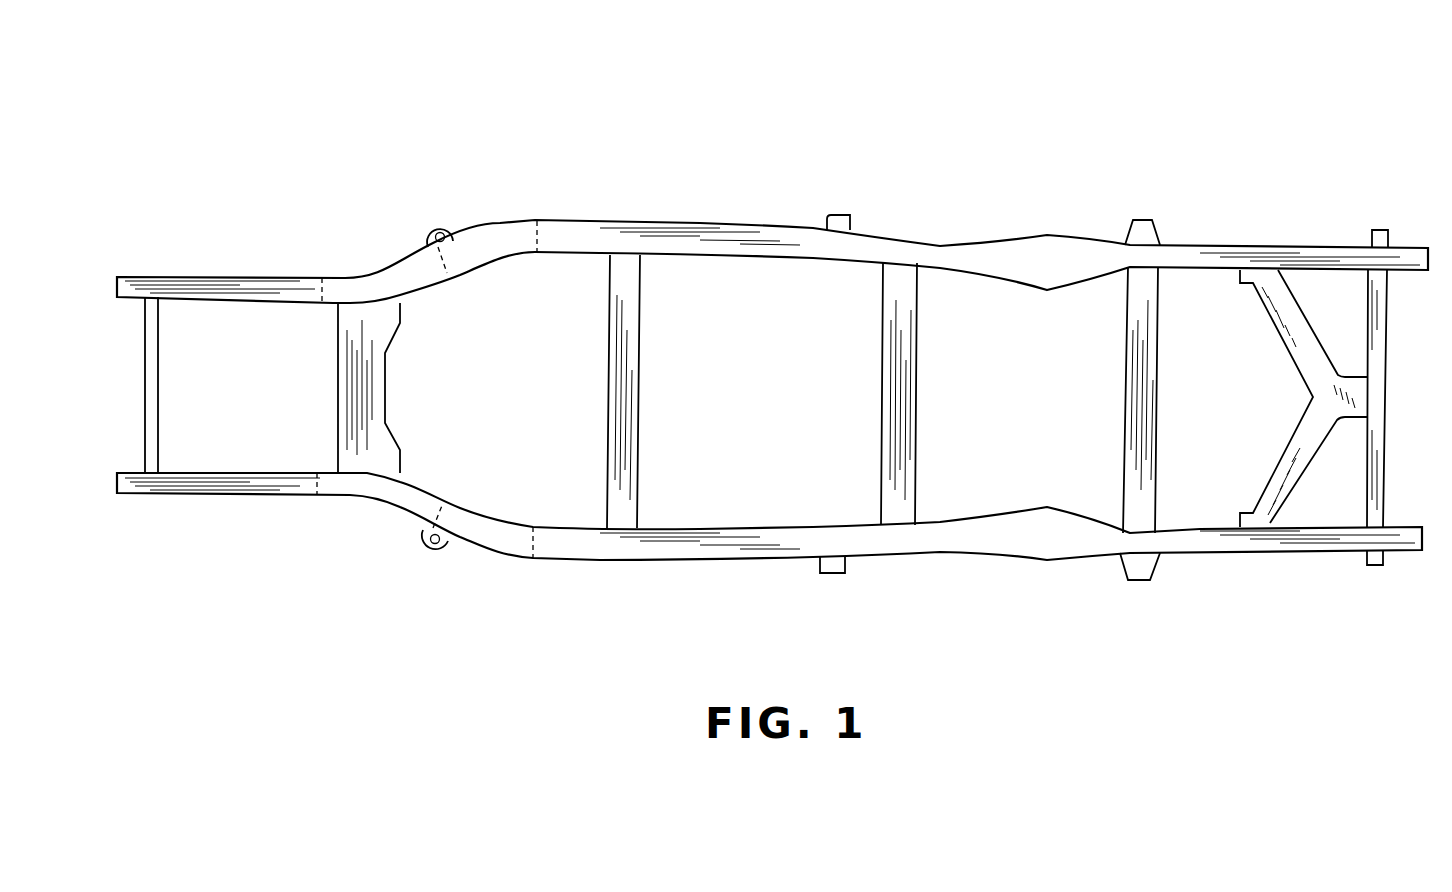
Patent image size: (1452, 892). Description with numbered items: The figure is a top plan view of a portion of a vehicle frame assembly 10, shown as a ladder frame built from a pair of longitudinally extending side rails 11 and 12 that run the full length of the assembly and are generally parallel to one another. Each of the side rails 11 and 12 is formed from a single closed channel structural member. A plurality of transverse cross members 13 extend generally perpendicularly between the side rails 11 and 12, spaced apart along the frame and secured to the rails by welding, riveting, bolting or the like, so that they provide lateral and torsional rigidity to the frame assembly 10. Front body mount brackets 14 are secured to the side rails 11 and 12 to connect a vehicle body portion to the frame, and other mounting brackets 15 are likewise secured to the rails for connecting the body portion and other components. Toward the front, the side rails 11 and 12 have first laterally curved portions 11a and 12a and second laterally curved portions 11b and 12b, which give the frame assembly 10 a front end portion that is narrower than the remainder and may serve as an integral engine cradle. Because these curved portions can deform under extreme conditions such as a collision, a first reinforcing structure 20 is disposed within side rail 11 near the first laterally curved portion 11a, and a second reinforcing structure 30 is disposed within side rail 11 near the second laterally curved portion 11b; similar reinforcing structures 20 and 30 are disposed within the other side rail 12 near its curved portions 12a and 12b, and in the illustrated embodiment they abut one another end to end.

The vehicle frame assembly 10 is at (1170, 88).
The side rail 11 is at (676, 577).
The first laterally curved portion 11a is at (353, 509).
The second laterally curved portion 11b is at (504, 508).
The side rail 12 is at (694, 203).
The first laterally curved portion 12a is at (348, 256).
The second laterally curved portion 12b is at (501, 270).
The cross members 13 is at (172, 369).
The front body mount brackets 14 is at (437, 226).
The mounting brackets 15 is at (837, 214).
The first reinforcing structure 20 is at (341, 281).
The second reinforcing structure 30 is at (490, 238).